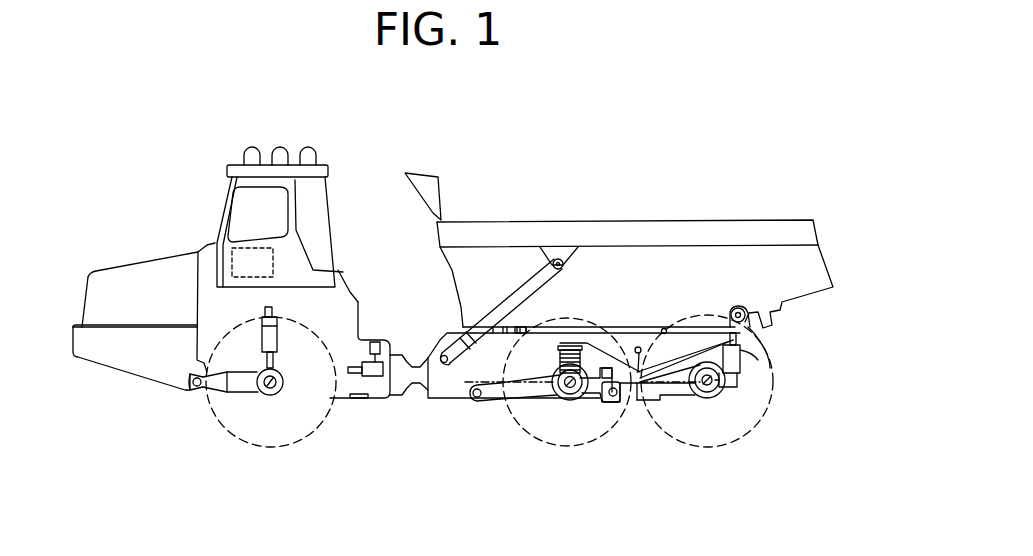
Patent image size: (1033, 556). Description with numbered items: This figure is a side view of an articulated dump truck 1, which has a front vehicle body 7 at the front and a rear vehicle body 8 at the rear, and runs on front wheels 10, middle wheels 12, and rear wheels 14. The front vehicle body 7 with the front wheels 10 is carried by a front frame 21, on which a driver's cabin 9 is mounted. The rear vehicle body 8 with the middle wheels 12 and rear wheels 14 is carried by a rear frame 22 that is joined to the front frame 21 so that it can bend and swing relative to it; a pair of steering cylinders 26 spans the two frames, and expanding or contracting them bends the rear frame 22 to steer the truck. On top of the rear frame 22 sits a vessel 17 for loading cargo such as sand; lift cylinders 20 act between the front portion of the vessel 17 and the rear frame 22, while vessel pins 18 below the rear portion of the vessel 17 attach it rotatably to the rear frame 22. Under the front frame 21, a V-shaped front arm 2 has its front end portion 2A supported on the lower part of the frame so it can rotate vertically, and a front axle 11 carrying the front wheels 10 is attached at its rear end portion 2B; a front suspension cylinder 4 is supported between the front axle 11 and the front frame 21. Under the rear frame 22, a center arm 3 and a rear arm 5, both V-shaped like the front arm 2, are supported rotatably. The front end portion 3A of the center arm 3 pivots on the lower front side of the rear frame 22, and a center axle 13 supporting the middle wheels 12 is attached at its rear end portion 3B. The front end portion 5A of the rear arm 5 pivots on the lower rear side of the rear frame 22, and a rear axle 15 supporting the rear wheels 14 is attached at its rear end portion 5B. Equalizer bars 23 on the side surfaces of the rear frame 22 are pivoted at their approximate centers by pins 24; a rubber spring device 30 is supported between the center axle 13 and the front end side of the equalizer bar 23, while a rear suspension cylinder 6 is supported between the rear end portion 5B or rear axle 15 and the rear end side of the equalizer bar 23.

The dump truck 1 is at (222, 92).
The front arm 2 is at (233, 393).
The front end portion of the front arm 2A is at (193, 390).
The rear end portion of the front arm 2B is at (283, 398).
The center arm 3 is at (527, 390).
The front end portion of the center arm 3A is at (477, 398).
The rear end portion of the center arm 3B is at (550, 388).
The front suspension cylinder 4 is at (277, 337).
The rear arm 5 is at (658, 395).
The front end portion of the rear arm 5A is at (638, 400).
The rear end portion of the rear arm 5B is at (690, 400).
The rear suspension cylinder 6 is at (732, 362).
The front vehicle body 7 is at (191, 189).
The rear vehicle body 8 is at (716, 173).
The driver's cabin 9 is at (217, 207).
The front wheels 10 is at (320, 405).
The front axle 11 is at (257, 400).
The middle wheels 12 is at (595, 445).
The center axle 13 is at (578, 400).
The rear wheels 14 is at (767, 410).
The rear axle 15 is at (715, 390).
The vessel 17 is at (537, 230).
The vessel pins 18 is at (737, 312).
The lift cylinders 20 is at (513, 300).
The front frame 21 is at (362, 300).
The rear frame 22 is at (418, 400).
The equalizer bars 23 is at (663, 327).
The pins 24 is at (638, 347).
The steering cylinders 26 is at (372, 373).
The rubber spring device 30 is at (520, 345).